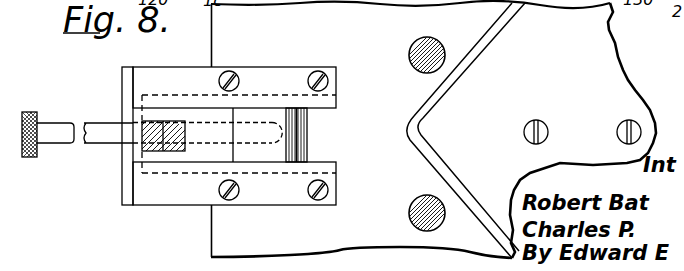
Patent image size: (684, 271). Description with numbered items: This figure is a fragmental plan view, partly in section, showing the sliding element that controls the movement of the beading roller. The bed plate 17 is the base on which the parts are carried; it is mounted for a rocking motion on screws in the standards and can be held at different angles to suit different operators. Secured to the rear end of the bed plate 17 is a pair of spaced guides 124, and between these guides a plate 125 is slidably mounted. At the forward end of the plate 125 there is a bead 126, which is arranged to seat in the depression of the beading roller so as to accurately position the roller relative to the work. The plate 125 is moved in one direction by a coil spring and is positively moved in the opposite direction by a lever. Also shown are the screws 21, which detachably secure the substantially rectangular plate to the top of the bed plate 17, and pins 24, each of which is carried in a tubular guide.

The bed plate 17 is at (433, 129).
The spaced guides 124 is at (258, 67).
The plate 125 is at (203, 150).
The bead 126 is at (307, 122).
The pin 24 is at (409, 50).
The screws 21 is at (616, 129).